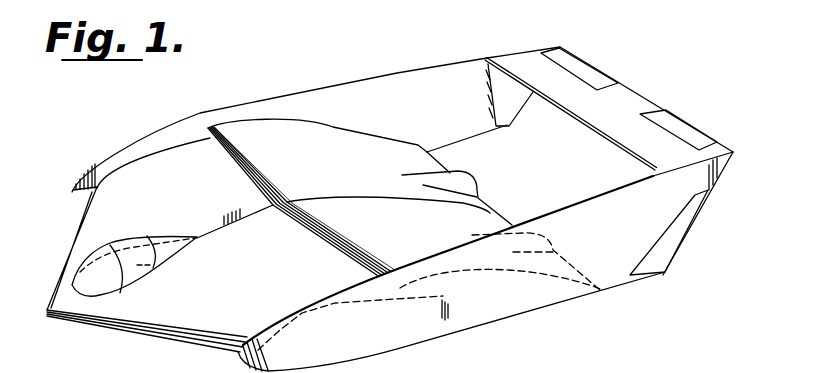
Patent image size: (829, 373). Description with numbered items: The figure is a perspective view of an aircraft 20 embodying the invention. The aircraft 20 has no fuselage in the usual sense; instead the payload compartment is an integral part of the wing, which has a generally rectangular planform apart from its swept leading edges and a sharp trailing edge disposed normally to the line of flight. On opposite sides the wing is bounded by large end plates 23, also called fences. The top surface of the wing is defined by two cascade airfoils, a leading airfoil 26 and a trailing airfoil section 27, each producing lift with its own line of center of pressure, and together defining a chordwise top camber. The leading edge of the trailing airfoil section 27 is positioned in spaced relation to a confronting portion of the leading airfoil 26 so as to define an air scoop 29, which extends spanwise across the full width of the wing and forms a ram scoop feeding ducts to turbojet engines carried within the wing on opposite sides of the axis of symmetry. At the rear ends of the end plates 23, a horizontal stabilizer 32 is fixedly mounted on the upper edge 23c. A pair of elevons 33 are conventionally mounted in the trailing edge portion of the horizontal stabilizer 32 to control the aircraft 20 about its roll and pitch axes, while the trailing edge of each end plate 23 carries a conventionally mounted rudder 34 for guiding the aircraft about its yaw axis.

The aircraft 20 is at (107, 338).
The end plates 23 is at (413, 43).
The upper edge 23c is at (780, 371).
The leading airfoil 26 is at (187, 328).
The trailing airfoil section 27 is at (297, 132).
The air scoop 29 is at (342, 257).
The horizontal stabilizer 32 is at (617, 143).
The elevons 33 is at (583, 67).
The rudder 34 is at (670, 247).